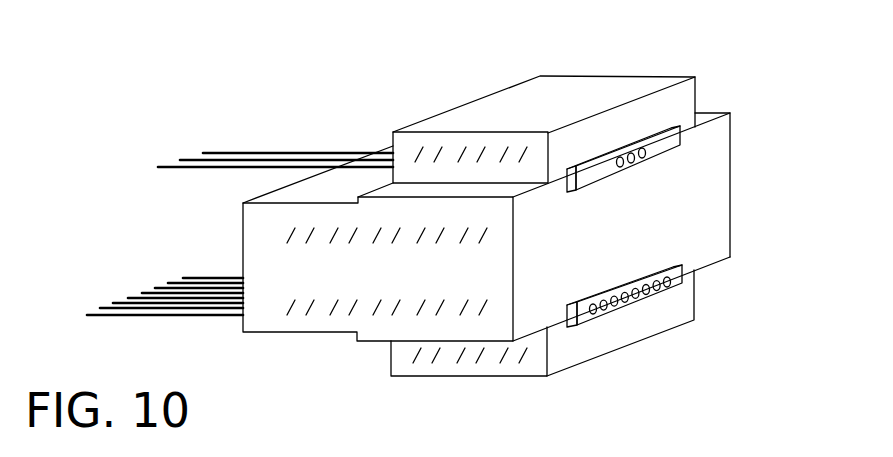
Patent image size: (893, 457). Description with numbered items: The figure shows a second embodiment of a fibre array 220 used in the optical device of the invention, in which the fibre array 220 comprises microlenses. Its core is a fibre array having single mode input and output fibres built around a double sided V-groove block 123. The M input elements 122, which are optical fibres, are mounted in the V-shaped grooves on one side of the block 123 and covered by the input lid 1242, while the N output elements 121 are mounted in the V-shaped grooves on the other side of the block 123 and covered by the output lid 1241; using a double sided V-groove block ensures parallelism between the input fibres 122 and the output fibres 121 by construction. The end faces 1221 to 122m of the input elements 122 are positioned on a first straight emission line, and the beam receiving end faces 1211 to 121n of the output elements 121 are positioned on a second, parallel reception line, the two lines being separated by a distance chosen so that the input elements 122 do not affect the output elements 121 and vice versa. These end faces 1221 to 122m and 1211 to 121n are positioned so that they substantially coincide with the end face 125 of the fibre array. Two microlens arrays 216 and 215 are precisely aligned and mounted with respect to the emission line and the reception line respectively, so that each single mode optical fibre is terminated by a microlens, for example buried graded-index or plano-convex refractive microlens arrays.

The fibre array 220 is at (152, 50).
The double sided V-groove block 123 is at (316, 322).
The end face of the fibre array 125 is at (693, 307).
The input lid 1242 is at (498, 105).
The output lid 1241 is at (402, 356).
The input elements 122 is at (248, 129).
The output elements 121 is at (207, 260).
The microlens array 216 is at (570, 175).
The microlens array 215 is at (582, 317).
The end face of the first input element 1221 is at (621, 150).
The end face of the m-th input element 122m is at (641, 148).
The beam receiving end face of the first output element 1211 is at (596, 302).
The beam receiving end face of the n-th output element 121n is at (666, 275).